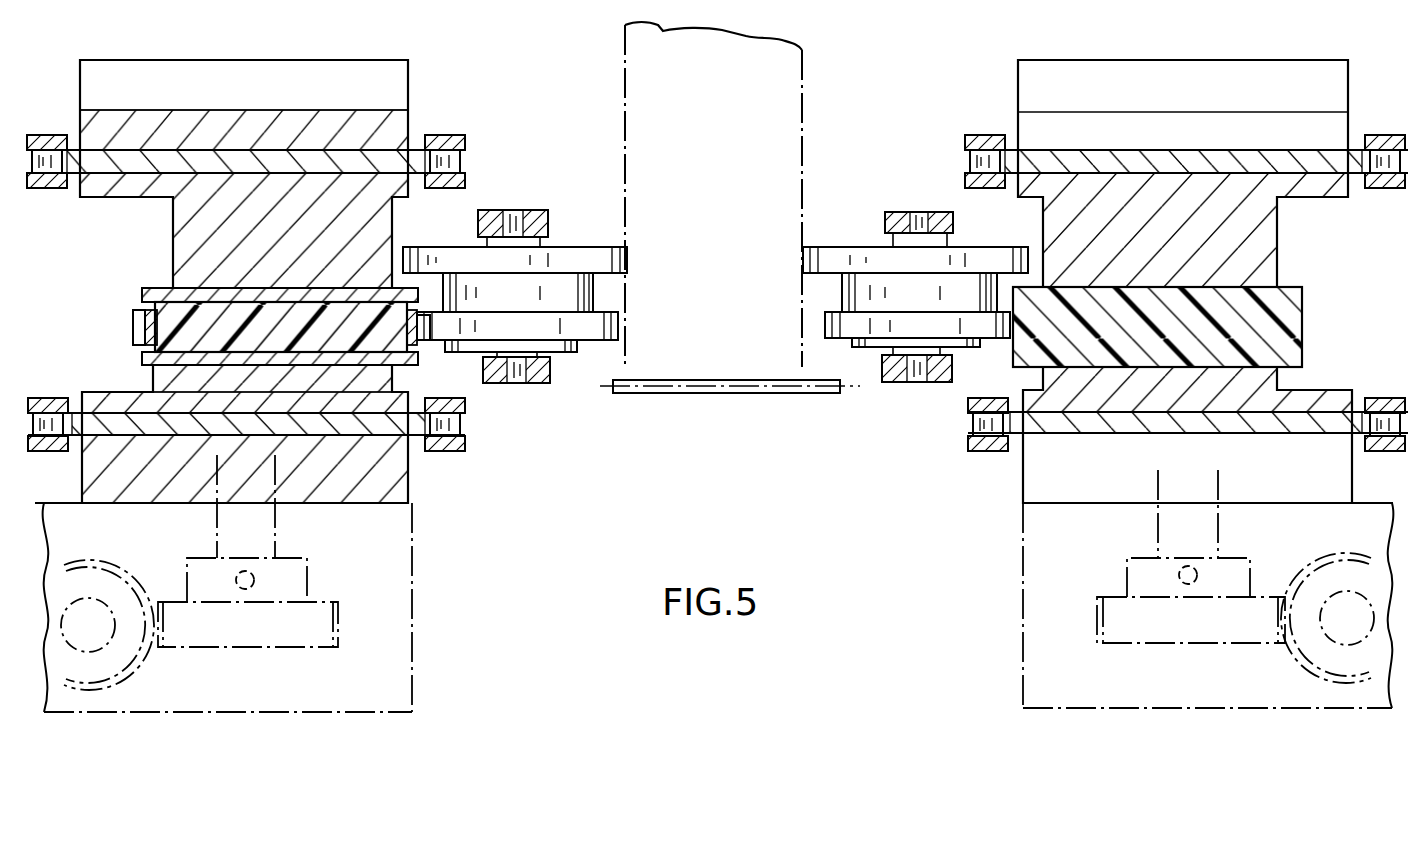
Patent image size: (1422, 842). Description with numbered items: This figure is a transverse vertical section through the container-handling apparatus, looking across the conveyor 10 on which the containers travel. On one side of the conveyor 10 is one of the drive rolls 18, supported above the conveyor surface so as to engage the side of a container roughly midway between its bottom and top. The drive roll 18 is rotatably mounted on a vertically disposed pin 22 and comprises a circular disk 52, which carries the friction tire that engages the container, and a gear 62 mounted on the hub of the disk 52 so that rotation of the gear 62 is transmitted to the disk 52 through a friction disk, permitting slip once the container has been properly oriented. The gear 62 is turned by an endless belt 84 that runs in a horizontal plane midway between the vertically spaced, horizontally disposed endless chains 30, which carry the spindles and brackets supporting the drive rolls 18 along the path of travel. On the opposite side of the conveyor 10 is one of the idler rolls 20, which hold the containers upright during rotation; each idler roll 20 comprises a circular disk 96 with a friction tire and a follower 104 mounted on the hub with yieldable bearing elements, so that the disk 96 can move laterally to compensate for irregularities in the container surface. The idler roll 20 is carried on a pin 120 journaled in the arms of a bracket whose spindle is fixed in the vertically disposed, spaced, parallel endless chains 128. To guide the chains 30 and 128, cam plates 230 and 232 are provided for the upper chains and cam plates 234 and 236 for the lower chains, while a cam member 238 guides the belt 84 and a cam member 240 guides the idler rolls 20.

The conveyor 10 is at (658, 395).
The drive rolls 18 is at (515, 298).
The idler rolls 20 is at (886, 280).
The pins 22 is at (517, 385).
The endless chains 30 is at (463, 167).
The circular disk 52 is at (455, 256).
The gear 62 is at (582, 331).
The endless belt 84 is at (135, 328).
The circular disk 96 is at (955, 256).
The follower 104 is at (828, 327).
The pins 120 is at (918, 215).
The endless chains 128 is at (966, 165).
The cam plate 230 is at (368, 162).
The cam plate 232 is at (1035, 157).
The cam plate 234 is at (408, 450).
The cam plate 236 is at (1075, 428).
The cam member 238 is at (173, 318).
The cam member 240 is at (1292, 312).